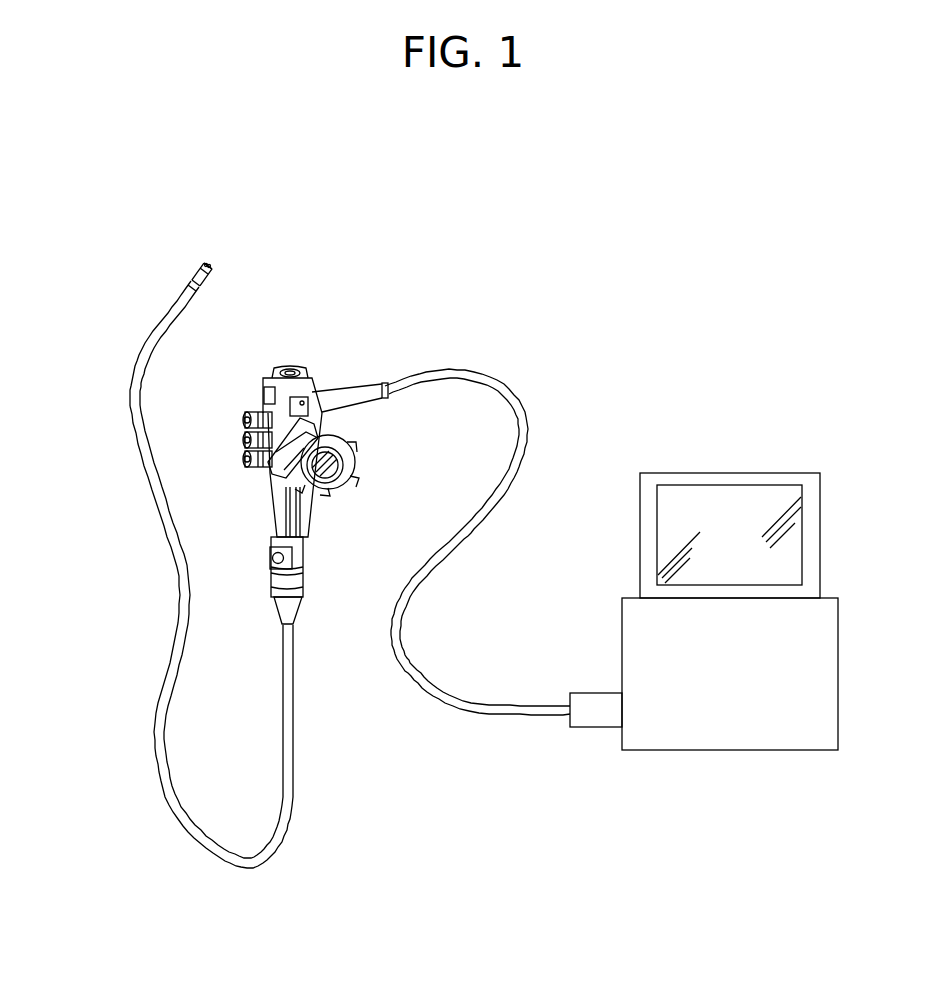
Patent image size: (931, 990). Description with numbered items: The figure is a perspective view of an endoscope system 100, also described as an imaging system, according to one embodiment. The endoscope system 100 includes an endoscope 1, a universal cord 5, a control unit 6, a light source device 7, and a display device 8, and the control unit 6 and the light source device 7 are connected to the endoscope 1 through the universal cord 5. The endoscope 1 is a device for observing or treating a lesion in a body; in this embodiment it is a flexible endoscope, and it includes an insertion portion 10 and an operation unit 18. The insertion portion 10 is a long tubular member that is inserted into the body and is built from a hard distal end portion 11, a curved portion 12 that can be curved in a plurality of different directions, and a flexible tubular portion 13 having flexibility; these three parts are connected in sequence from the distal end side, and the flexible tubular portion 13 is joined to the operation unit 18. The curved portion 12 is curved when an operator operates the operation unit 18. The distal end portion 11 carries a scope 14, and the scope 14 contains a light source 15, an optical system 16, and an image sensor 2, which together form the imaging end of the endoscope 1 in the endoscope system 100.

The endoscope system 100 is at (707, 222).
The endoscope 1 is at (420, 256).
The insertion portion 10 is at (82, 226).
The distal end portion 11 is at (175, 277).
The curved portion 12 is at (140, 326).
The flexible tubular portion 13 is at (142, 491).
The scope 14 is at (150, 184).
The light source 15 is at (205, 264).
The optical system 16 is at (209, 265).
The image sensor 2 is at (212, 266).
The operation unit 18 is at (298, 353).
The universal cord 5 is at (462, 371).
The display device 8 is at (733, 472).
The control unit 6 is at (745, 752).
The light source device 7 is at (730, 674).